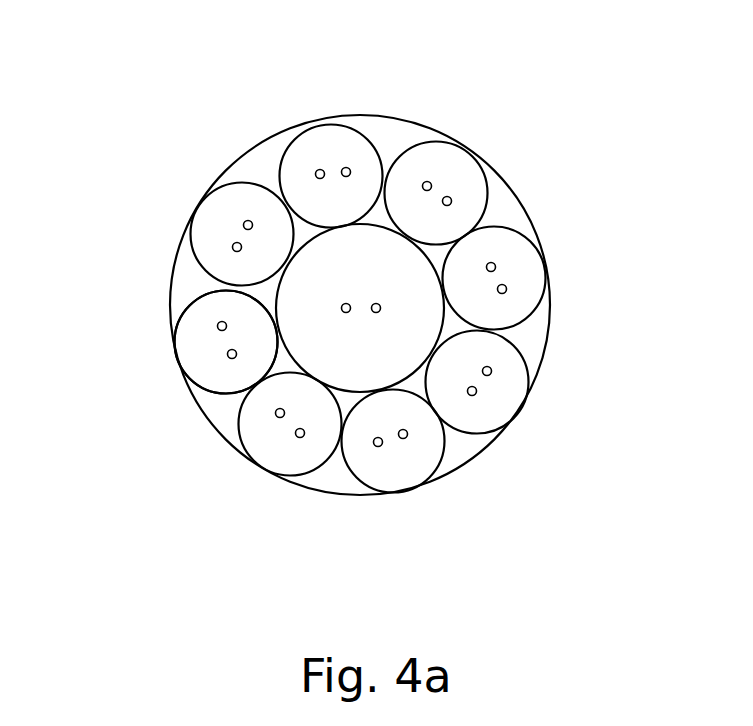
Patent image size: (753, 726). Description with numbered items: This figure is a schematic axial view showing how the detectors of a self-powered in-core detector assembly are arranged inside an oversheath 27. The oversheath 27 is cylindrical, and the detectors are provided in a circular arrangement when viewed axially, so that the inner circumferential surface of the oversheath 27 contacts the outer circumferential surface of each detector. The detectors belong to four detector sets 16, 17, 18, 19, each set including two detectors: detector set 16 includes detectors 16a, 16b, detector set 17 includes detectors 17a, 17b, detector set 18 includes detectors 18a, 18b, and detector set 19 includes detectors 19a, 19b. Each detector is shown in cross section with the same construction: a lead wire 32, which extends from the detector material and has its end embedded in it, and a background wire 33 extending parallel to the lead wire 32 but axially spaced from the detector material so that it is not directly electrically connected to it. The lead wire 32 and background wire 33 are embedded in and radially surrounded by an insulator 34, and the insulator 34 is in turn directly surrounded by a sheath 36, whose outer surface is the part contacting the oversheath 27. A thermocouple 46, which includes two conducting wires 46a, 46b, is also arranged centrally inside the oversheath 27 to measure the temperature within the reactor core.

The detector set 16 is at (118, 275).
The detector 16a is at (178, 372).
The detector 16b is at (187, 197).
The detector set 17 is at (401, 79).
The detector 17a is at (288, 120).
The detector 17b is at (474, 136).
The detector set 18 is at (602, 334).
The detector 18a is at (563, 258).
The detector 18b is at (536, 408).
The detector set 19 is at (348, 545).
The detector 19a is at (431, 490).
The detector 19b is at (259, 486).
The oversheath 27 is at (188, 221).
The lead wire 32 is at (228, 355).
The background wire 33 is at (217, 325).
The insulator 34 is at (220, 387).
The sheath 36 is at (182, 310).
The thermocouple 46 is at (323, 293).
The conducting wire 46a is at (346, 313).
The conducting wire 46b is at (376, 303).